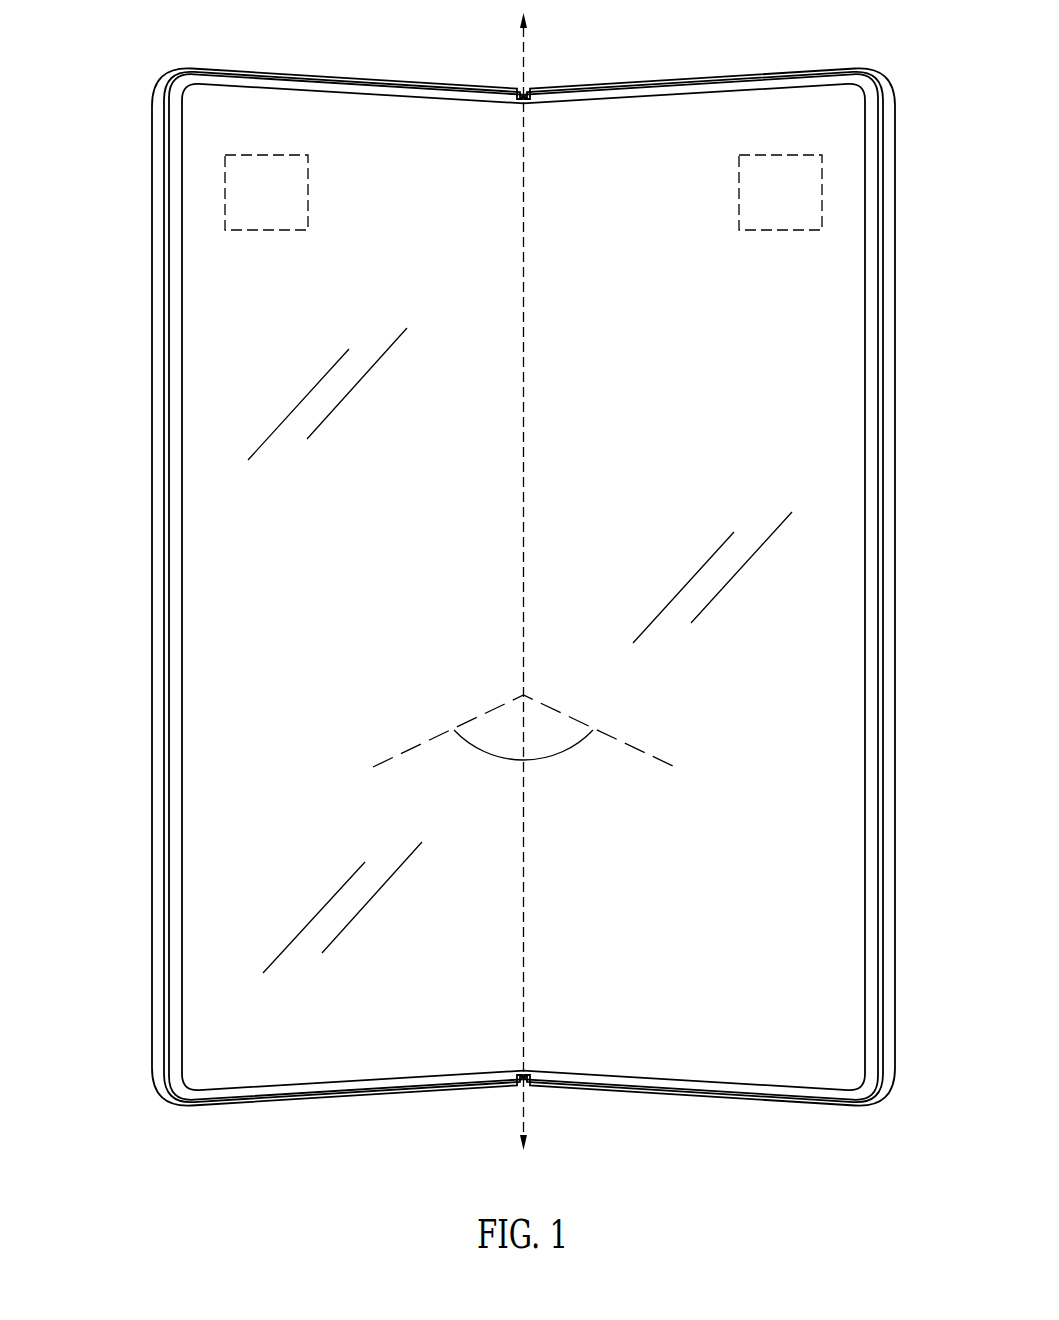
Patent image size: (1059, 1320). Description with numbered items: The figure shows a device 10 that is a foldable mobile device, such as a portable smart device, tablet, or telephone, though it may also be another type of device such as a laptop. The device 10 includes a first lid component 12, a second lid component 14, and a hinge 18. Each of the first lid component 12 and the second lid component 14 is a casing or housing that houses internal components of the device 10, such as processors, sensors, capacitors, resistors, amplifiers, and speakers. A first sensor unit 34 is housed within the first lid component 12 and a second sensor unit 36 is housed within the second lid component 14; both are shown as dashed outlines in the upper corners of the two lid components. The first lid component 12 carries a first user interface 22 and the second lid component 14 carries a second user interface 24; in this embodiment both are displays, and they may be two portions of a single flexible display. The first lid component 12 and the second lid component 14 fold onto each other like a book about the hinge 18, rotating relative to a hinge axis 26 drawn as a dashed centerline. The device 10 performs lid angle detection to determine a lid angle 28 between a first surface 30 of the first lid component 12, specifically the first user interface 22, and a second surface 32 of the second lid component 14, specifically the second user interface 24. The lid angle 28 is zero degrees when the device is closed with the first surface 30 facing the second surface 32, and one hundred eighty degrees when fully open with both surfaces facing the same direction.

The device 10 is at (77, 73).
The first lid component 12 is at (168, 82).
The second lid component 14 is at (897, 256).
The hinge 18 is at (523, 659).
The first user interface 22 is at (270, 533).
The second user interface 24 is at (753, 403).
The hinge axis 26 is at (526, 63).
The lid angle 28 is at (472, 752).
The first surface 30 is at (305, 336).
The second surface 32 is at (742, 468).
The first sensor unit 34 is at (226, 182).
The second sensor unit 36 is at (822, 182).